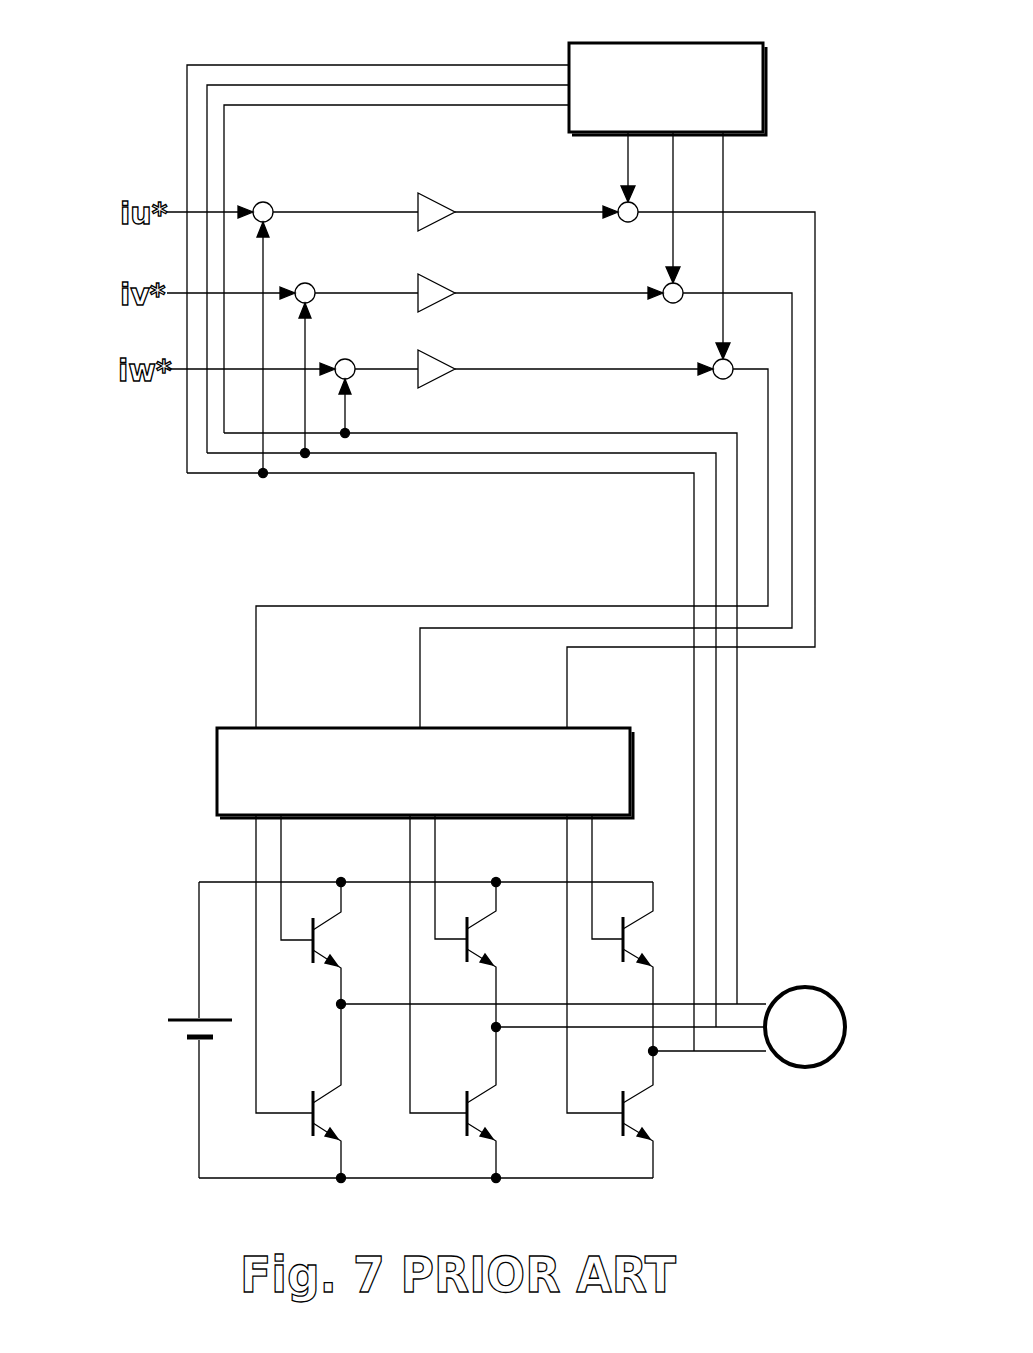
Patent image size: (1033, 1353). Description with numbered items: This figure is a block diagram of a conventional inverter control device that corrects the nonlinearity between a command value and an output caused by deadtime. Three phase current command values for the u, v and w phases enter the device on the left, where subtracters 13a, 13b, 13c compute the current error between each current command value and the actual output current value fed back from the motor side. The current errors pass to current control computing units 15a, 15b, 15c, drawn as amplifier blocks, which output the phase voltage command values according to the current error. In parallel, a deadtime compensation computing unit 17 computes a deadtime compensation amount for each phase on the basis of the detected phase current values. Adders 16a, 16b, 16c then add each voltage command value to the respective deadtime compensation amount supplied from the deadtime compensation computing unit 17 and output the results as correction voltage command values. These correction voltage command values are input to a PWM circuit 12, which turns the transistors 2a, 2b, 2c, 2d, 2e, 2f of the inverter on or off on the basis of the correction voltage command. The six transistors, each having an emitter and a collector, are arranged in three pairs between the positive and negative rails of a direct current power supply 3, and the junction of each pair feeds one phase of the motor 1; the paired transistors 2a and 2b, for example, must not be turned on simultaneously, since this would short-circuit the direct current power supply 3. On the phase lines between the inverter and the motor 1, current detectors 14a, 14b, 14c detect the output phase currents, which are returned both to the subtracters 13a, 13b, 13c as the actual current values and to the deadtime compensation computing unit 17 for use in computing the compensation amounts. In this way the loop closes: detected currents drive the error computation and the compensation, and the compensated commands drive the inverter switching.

The motor 1 is at (811, 989).
The transistor 2a is at (348, 943).
The transistor 2b is at (349, 1091).
The transistor 2c is at (501, 954).
The transistor 2d is at (503, 1102).
The transistor 2e is at (659, 966).
The transistor 2f is at (656, 1114).
The direct current power supply 3 is at (195, 1047).
The PWM circuit 12 is at (215, 724).
The subtracter 13a is at (269, 206).
The subtracter 13b is at (310, 289).
The subtracter 13c is at (348, 366).
The current detector 14a is at (753, 986).
The current detector 14b is at (732, 1040).
The current detector 14c is at (705, 1068).
The current control computing unit 15a is at (440, 206).
The current control computing unit 15b is at (440, 289).
The current control computing unit 15c is at (440, 366).
The adder 16a is at (611, 195).
The adder 16b is at (656, 275).
The adder 16c is at (704, 353).
The deadtime compensation computing unit 17 is at (738, 134).